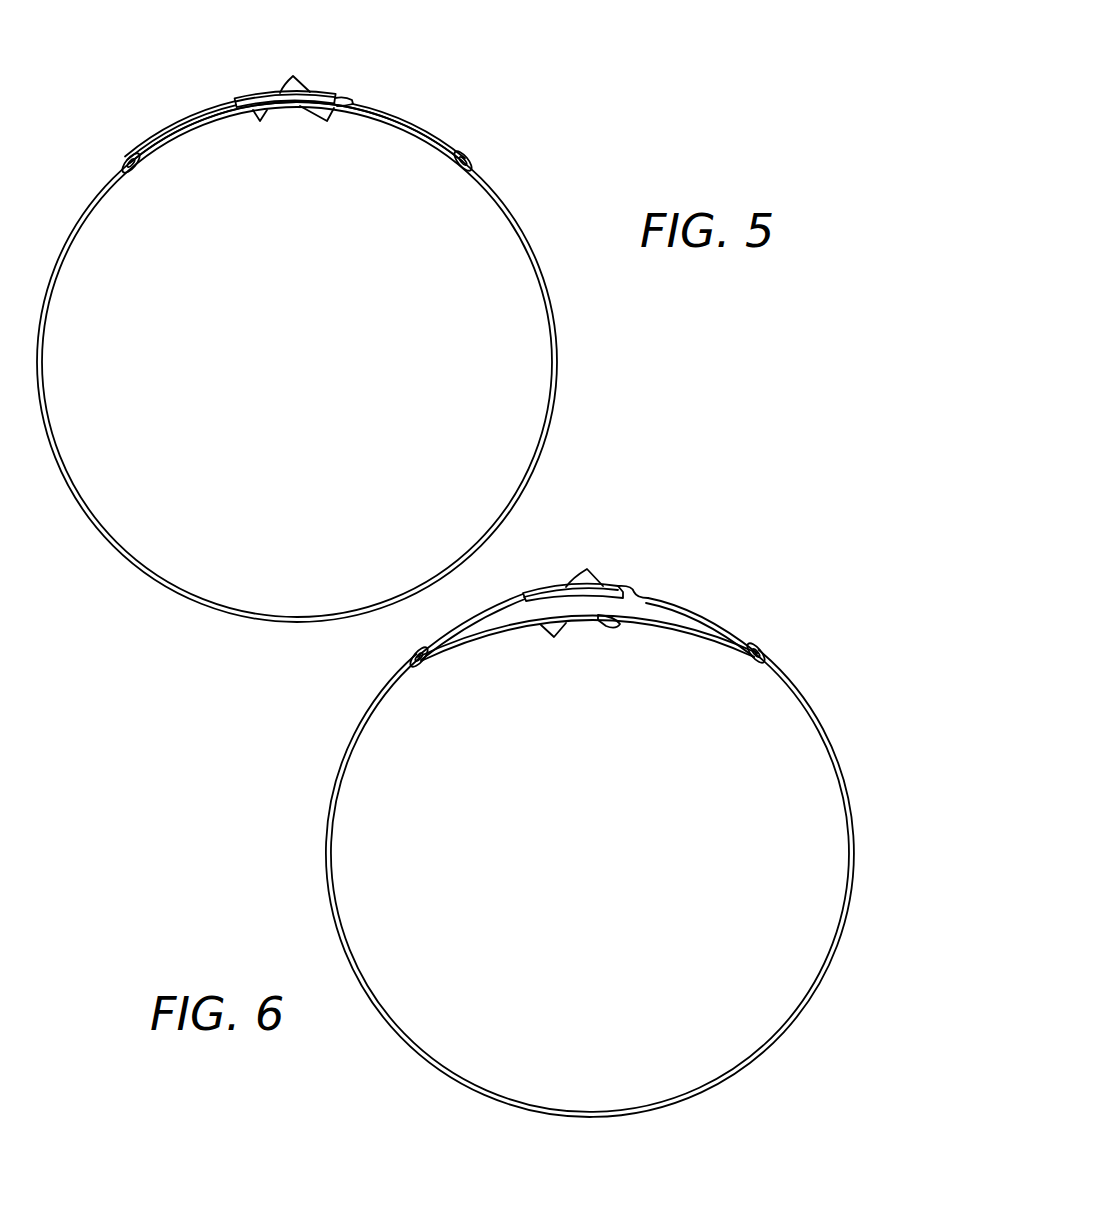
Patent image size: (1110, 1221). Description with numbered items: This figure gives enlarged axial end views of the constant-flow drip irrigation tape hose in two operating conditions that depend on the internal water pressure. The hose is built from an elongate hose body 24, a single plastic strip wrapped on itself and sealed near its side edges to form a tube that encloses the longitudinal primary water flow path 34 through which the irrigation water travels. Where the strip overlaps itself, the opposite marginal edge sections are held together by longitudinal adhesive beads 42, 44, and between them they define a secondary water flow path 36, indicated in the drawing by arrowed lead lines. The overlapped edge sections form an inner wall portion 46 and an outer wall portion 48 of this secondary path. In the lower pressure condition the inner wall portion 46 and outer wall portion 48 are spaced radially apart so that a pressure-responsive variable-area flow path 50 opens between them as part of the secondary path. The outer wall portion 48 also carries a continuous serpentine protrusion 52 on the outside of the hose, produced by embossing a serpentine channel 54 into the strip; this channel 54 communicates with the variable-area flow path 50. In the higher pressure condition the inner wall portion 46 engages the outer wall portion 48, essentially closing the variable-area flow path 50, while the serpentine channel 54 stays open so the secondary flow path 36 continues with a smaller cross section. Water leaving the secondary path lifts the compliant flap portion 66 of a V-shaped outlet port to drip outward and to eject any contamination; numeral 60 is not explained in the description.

In FIG. 5, the hose body 24 is at (560, 338).
In FIG. 6, the hose body 24 is at (845, 782).
In FIG. 5, the primary water flow path 34 is at (318, 351).
In FIG. 6, the primary water flow path 34 is at (609, 841).
In FIG. 5, the secondary water flow path 36 is at (342, 122).
In FIG. 6, the secondary water flow path 36 is at (683, 612).
In FIG. 5, the longitudinal adhesive bead 42 is at (474, 158).
In FIG. 6, the longitudinal adhesive bead 42 is at (761, 657).
In FIG. 5, the longitudinal adhesive bead 44 is at (122, 160).
In FIG. 6, the longitudinal adhesive bead 44 is at (413, 661).
In FIG. 5, the inner wall portion 46 is at (402, 127).
In FIG. 6, the inner wall portion 46 is at (657, 627).
In FIG. 5, the outer wall portion 48 is at (180, 128).
In FIG. 6, the outer wall portion 48 is at (483, 619).
In FIG. 6, the pressure-responsive variable-area flow path 50 is at (507, 612).
In FIG. 5, the serpentine protrusion 52 is at (326, 84).
In FIG. 5, the serpentine channel 54 is at (355, 100).
In FIG. 6, the serpentine channel 54 is at (645, 592).
In FIG. 5, the tab 60 is at (300, 112).
In FIG. 6, the tab 60 is at (598, 620).
In FIG. 5, the flap portion 66 is at (287, 90).
In FIG. 6, the flap portion 66 is at (590, 578).